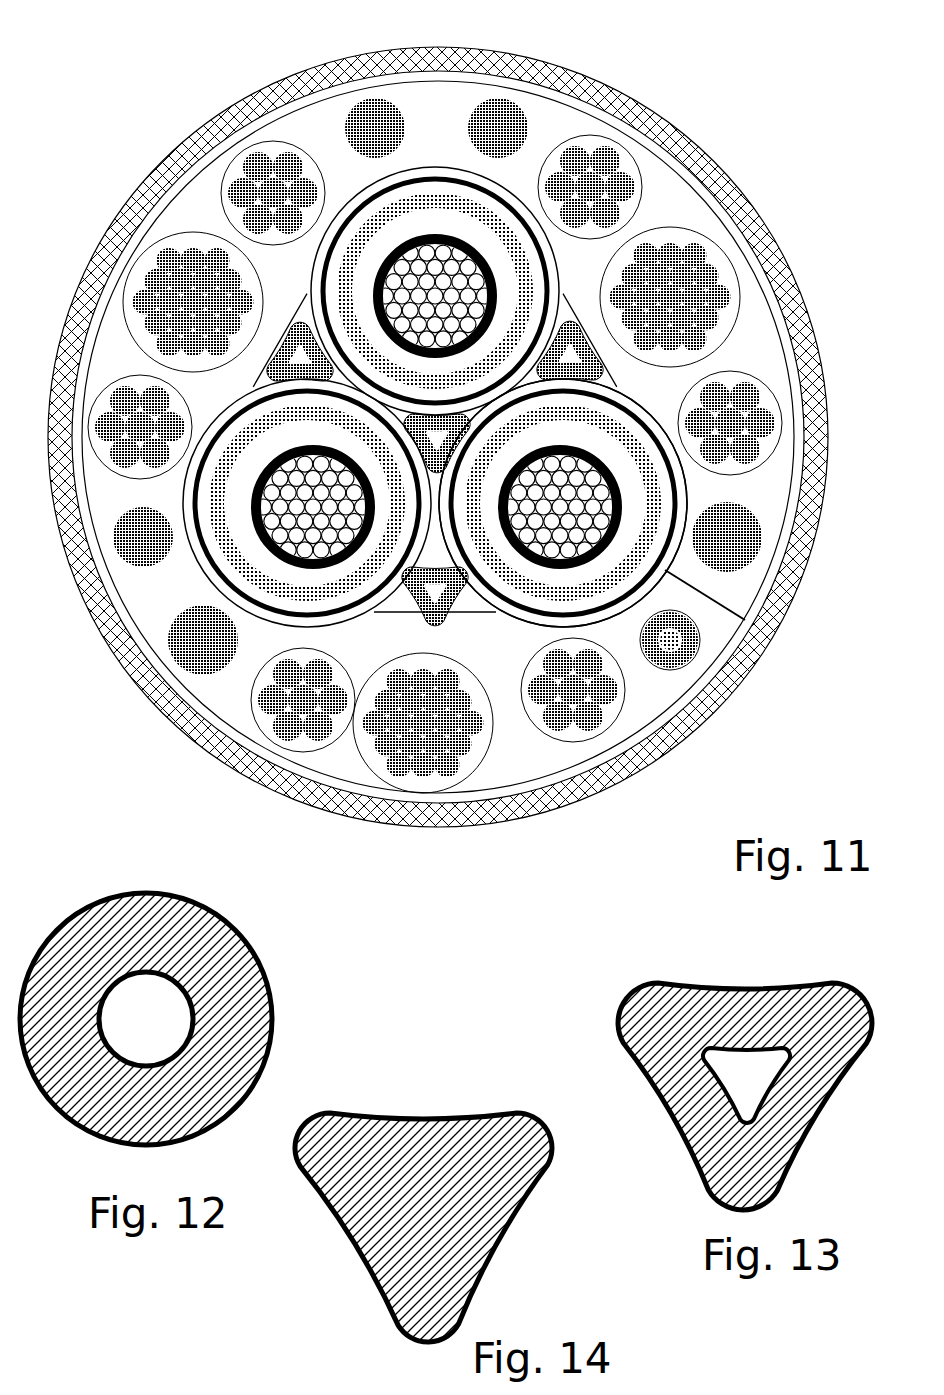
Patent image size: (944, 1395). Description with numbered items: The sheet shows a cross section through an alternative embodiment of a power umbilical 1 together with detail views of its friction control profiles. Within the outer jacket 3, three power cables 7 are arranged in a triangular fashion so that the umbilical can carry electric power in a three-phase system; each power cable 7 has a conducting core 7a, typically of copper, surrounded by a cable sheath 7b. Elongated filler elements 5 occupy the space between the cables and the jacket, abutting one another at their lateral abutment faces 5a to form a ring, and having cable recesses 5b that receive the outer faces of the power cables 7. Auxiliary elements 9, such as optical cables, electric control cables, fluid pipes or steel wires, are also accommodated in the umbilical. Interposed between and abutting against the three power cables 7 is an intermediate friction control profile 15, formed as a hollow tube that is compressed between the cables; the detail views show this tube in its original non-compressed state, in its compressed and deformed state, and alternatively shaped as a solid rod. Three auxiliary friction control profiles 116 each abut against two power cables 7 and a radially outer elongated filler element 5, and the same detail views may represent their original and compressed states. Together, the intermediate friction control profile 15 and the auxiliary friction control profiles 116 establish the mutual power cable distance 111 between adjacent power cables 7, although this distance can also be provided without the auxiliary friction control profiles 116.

In FIG. 11, the umbilical 1 is at (151, 134).
In FIG. 11, the outer jacket 3 is at (280, 777).
In FIG. 11, the elongated filler element 5 is at (310, 137).
In FIG. 11, the lateral abutment face 5a is at (437, 168).
In FIG. 11, the cable recess 5b is at (200, 496).
In FIG. 11, the power cable 7 is at (360, 637).
In FIG. 11, the conducting core 7a is at (582, 507).
In FIG. 11, the cable sheath 7b is at (650, 577).
In FIG. 11, the auxiliary element 9 is at (528, 127).
In FIG. 11, the intermediate friction control profile 15 is at (450, 445).
In FIG. 12, the intermediate friction control profile 15 is at (184, 877).
In FIG. 13, the intermediate friction control profile 15 is at (598, 1004).
In FIG. 14, the intermediate friction control profile 15 is at (437, 1090).
In FIG. 11, the mutual power cable distance 111 is at (375, 385).
In FIG. 11, the auxiliary friction control profile 116 is at (593, 367).